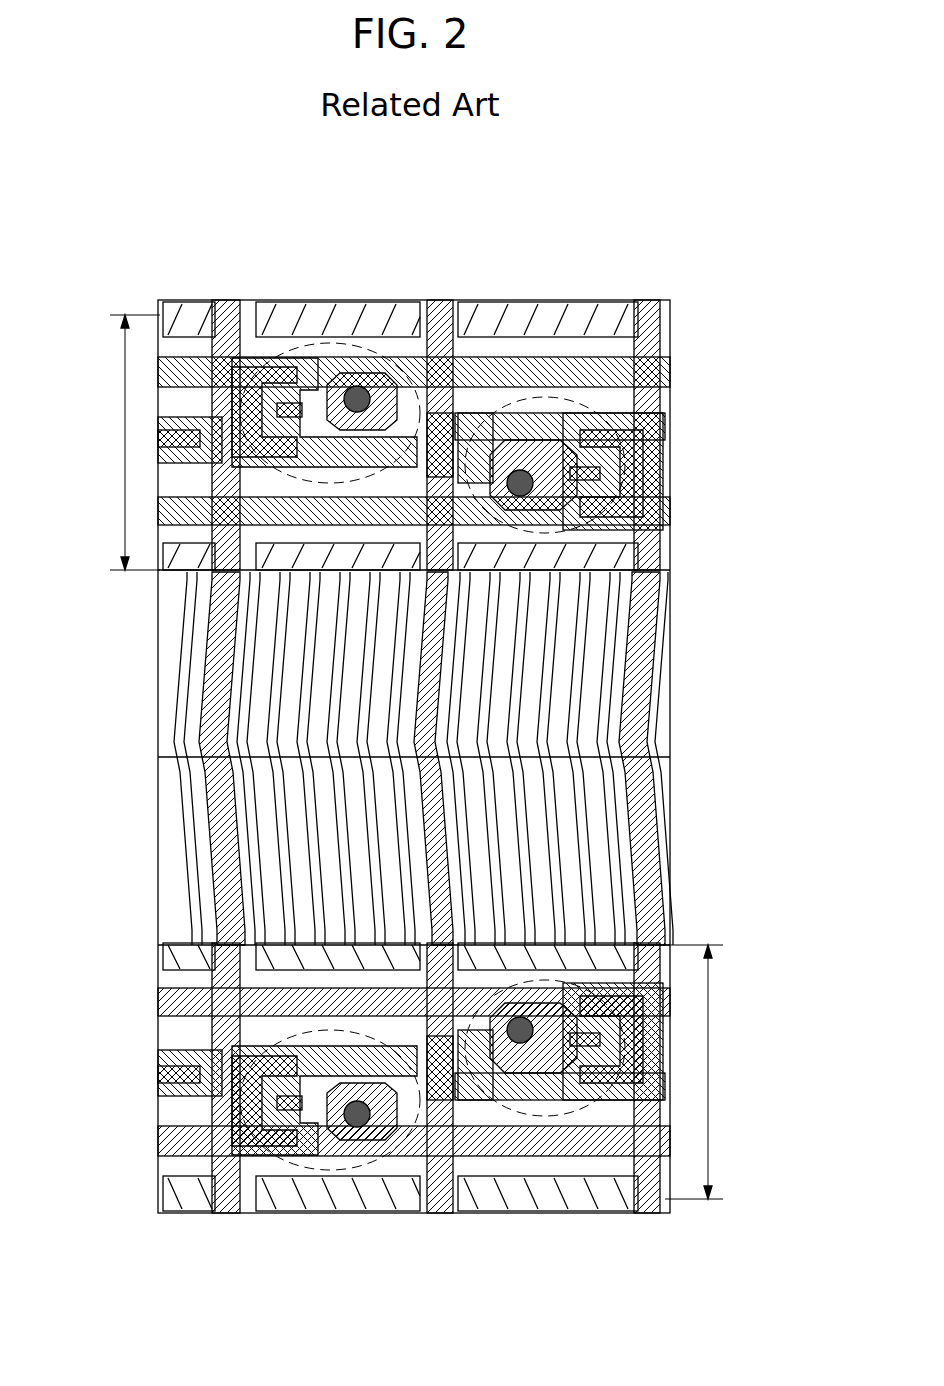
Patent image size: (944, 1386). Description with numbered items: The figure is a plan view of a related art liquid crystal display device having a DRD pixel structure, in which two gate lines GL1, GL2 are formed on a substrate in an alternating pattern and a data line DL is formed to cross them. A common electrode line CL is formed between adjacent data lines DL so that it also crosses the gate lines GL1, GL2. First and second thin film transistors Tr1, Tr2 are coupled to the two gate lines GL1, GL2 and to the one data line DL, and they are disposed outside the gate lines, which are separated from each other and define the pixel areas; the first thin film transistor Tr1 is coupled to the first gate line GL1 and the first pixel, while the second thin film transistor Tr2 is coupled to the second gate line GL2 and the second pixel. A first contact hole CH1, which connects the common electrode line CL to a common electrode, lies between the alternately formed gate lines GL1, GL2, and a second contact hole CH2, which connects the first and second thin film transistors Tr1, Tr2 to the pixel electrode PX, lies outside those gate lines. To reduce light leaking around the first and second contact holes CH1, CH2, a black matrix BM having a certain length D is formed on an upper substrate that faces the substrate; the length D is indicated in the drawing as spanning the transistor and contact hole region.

The data line DL is at (222, 300).
The common electrode line CL is at (432, 300).
The first gate line GL1 is at (597, 380).
The second gate line GL2 is at (662, 430).
The first thin film transistor Tr1 is at (300, 300).
The second thin film transistor Tr2 is at (283, 1165).
The first contact hole CH1 is at (445, 420).
The second contact hole CH2 is at (352, 378).
The pixel electrode PX is at (610, 855).
The black matrix BM is at (233, 978).
The length of the black matrix D is at (415, 757).